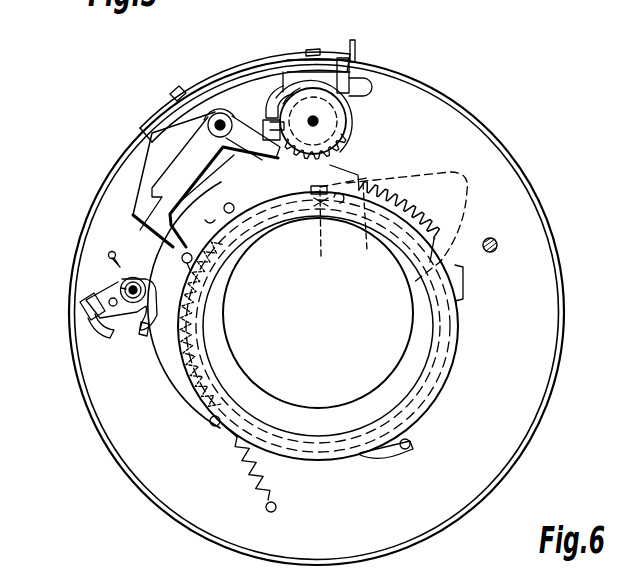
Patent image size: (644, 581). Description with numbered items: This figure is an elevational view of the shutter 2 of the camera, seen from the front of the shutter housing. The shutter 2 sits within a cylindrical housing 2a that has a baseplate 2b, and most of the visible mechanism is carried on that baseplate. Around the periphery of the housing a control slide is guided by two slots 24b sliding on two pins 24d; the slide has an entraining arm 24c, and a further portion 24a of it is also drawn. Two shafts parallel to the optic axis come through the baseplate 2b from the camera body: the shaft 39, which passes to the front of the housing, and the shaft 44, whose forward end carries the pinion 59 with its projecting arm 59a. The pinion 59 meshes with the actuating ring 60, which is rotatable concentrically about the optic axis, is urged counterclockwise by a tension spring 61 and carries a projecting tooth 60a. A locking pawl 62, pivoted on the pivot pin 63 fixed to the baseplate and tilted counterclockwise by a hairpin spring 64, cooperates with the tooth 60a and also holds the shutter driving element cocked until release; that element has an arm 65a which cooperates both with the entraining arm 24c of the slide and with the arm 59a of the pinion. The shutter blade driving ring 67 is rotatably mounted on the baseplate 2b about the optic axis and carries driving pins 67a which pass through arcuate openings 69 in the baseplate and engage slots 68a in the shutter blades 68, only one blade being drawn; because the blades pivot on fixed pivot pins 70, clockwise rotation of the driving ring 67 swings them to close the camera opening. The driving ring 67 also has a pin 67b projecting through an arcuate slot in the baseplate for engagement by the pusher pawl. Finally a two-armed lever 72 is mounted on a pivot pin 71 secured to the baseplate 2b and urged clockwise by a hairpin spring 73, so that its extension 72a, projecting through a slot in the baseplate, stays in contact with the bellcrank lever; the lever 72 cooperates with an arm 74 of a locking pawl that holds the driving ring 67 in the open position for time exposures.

The shutter 2 is at (465, 108).
The cylindrical housing 2a is at (97, 203).
The baseplate 2b is at (538, 295).
The pin 24a is at (356, 52).
The slots 24b is at (302, 50).
The entraining arm 24c is at (364, 65).
The pins 24d is at (173, 94).
The shaft 39 is at (497, 241).
The shaft 44 is at (319, 121).
The pinion 59 is at (297, 117).
The arm 59a is at (268, 119).
The actuating ring 60 is at (368, 170).
The projecting tooth 60a is at (230, 175).
The tension spring 61 is at (237, 438).
The locking pawl 62 is at (154, 210).
The pivot pin 63 is at (216, 114).
The hairpin spring 64 is at (153, 188).
The arm 65a is at (264, 116).
The shutter blade driving ring 67 is at (437, 357).
The driving pins 67a is at (318, 192).
The pin 67b is at (290, 57).
The shutter blade 68 is at (468, 184).
The slot 68a is at (324, 234).
The arcuate openings 69 is at (371, 227).
The fixed pivot pins 70 is at (338, 203).
The pivot pin 71 is at (123, 288).
The two-armed lever 72 is at (134, 277).
The extension 72a is at (88, 312).
The hairpin spring 73 is at (120, 267).
The arm 74 is at (140, 335).